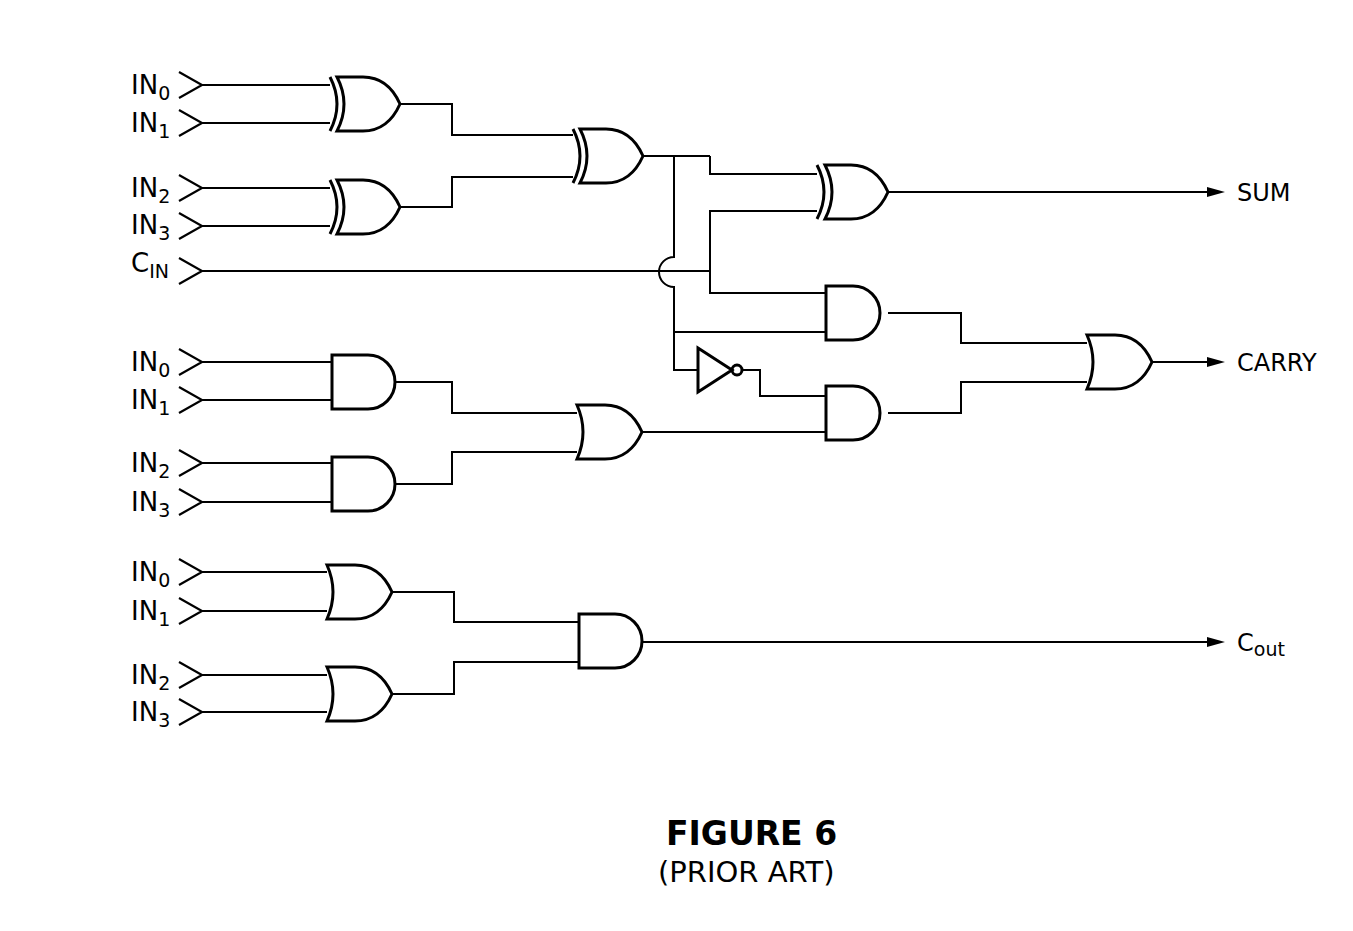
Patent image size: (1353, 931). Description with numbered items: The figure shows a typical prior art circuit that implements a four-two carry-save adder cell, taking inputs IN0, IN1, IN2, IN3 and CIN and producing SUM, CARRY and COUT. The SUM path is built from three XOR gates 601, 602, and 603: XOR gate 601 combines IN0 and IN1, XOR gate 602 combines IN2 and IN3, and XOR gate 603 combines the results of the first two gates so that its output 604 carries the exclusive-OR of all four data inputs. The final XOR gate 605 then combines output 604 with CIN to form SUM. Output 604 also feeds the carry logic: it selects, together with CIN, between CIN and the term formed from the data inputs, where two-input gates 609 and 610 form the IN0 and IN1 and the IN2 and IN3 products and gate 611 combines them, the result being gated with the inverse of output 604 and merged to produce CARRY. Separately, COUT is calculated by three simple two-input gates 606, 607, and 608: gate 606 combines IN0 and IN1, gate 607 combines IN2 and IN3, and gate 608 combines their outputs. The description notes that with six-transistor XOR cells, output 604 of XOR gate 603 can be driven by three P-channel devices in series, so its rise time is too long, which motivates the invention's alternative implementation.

The XOR gate 601 is at (388, 83).
The XOR gate 602 is at (388, 186).
The XOR gate 603 is at (628, 131).
The output of XOR gate 603 604 is at (711, 156).
The final XOR gate 605 is at (877, 172).
The two-input gate 606 is at (386, 607).
The two-input gate 607 is at (386, 709).
The two-input gate 608 is at (638, 657).
The gate 609 is at (388, 397).
The gate 610 is at (388, 499).
The gate 611 is at (632, 447).